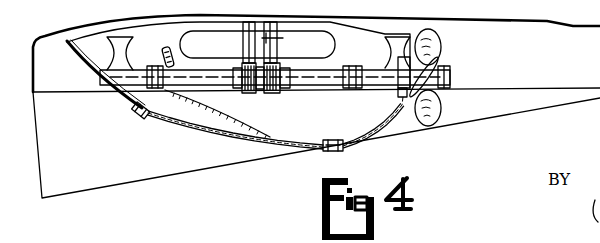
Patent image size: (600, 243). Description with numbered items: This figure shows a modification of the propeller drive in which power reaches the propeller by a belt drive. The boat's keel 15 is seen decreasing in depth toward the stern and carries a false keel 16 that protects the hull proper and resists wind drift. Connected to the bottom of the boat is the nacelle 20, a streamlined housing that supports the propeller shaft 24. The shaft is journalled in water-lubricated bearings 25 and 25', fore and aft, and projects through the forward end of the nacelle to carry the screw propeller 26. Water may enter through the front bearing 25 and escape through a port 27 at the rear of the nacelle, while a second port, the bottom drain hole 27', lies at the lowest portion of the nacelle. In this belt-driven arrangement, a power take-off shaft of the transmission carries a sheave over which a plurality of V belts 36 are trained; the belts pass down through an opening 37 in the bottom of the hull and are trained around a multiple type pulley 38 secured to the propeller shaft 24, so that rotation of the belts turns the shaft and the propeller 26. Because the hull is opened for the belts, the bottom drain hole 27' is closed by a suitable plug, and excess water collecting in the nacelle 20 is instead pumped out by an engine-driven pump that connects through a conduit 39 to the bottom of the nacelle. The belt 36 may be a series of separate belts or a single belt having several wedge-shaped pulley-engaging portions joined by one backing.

The keel 15 is at (81, 92).
The false keel 16 is at (83, 190).
The nacelle 20 is at (199, 135).
The propeller shaft 24 is at (331, 85).
The front bearing 25 is at (385, 67).
The aft bearing 25' is at (140, 51).
The screw propeller 26 is at (441, 42).
The port 27 is at (136, 118).
The bottom drain hole 27' is at (351, 152).
The V belts 36 is at (286, 42).
The opening 37 is at (194, 36).
The multiple type pulley 38 is at (294, 92).
The conduit 39 is at (222, 114).